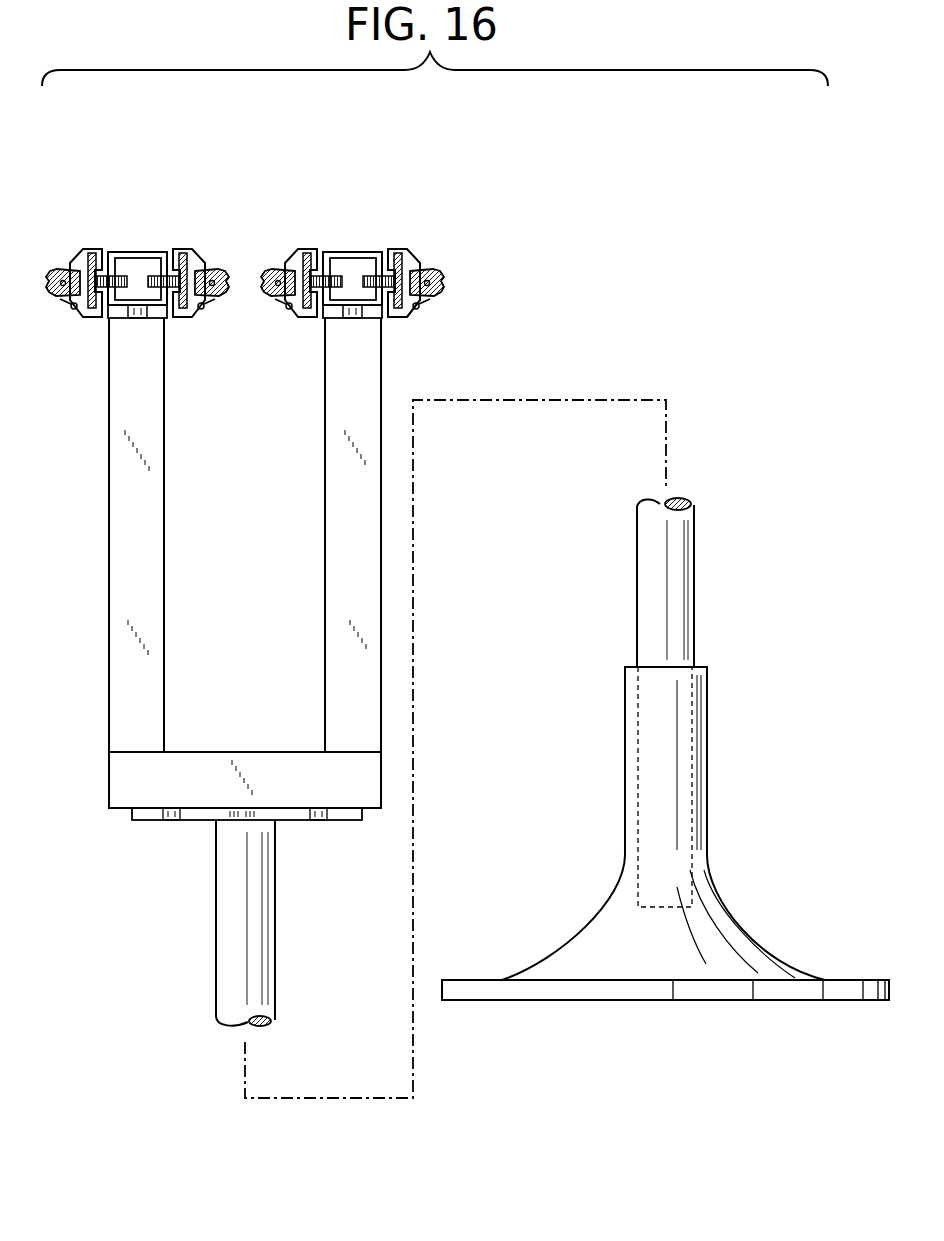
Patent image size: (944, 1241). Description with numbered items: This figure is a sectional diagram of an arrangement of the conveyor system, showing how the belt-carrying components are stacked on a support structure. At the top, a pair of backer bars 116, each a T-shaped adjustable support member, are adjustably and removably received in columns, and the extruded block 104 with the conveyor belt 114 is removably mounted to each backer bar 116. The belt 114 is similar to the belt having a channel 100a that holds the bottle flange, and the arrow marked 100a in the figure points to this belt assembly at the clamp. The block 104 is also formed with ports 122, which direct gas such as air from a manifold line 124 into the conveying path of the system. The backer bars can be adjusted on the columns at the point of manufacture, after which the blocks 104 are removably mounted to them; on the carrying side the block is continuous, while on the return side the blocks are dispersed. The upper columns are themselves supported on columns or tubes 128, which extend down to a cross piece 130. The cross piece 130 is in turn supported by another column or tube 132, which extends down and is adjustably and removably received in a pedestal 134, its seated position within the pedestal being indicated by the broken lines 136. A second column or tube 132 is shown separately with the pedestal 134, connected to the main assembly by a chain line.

The channel 100a is at (419, 269).
The extruded block 104 is at (410, 258).
The conveyor belt 114 is at (437, 275).
The backer bar 116 is at (365, 277).
The ports 122 is at (432, 300).
The manifold line 124 is at (417, 305).
The columns or tubes 128 is at (338, 480).
The cross piece 130 is at (255, 763).
The column or tube 132 is at (225, 888).
The pedestal 134 is at (630, 739).
The broken lines 136 is at (692, 742).